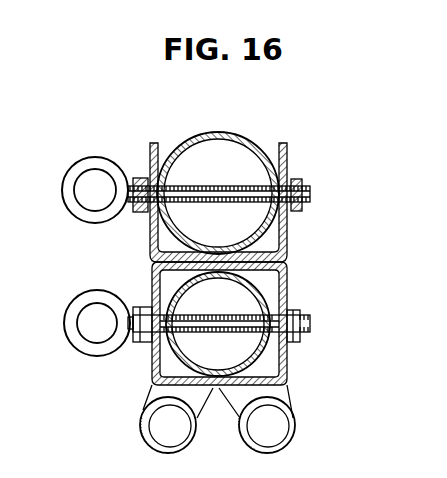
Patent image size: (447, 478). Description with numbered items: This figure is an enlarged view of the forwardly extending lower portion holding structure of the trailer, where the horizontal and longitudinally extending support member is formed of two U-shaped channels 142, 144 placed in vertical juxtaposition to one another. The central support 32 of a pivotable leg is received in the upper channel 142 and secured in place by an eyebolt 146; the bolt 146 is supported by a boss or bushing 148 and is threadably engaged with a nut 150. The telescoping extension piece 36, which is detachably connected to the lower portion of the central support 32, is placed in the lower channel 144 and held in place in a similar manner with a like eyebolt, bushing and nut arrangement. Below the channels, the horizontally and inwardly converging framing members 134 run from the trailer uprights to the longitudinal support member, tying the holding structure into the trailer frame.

The central support member 32 is at (216, 132).
The telescoping extension piece 36 is at (233, 276).
The horizontally and inwardly converging framing members 134 is at (217, 430).
The U-shaped channel 142 is at (296, 238).
The U-shaped channel 144 is at (282, 367).
The eyebolt 146 is at (70, 178).
The boss or bushing 148 is at (143, 180).
The nut 150 is at (296, 182).